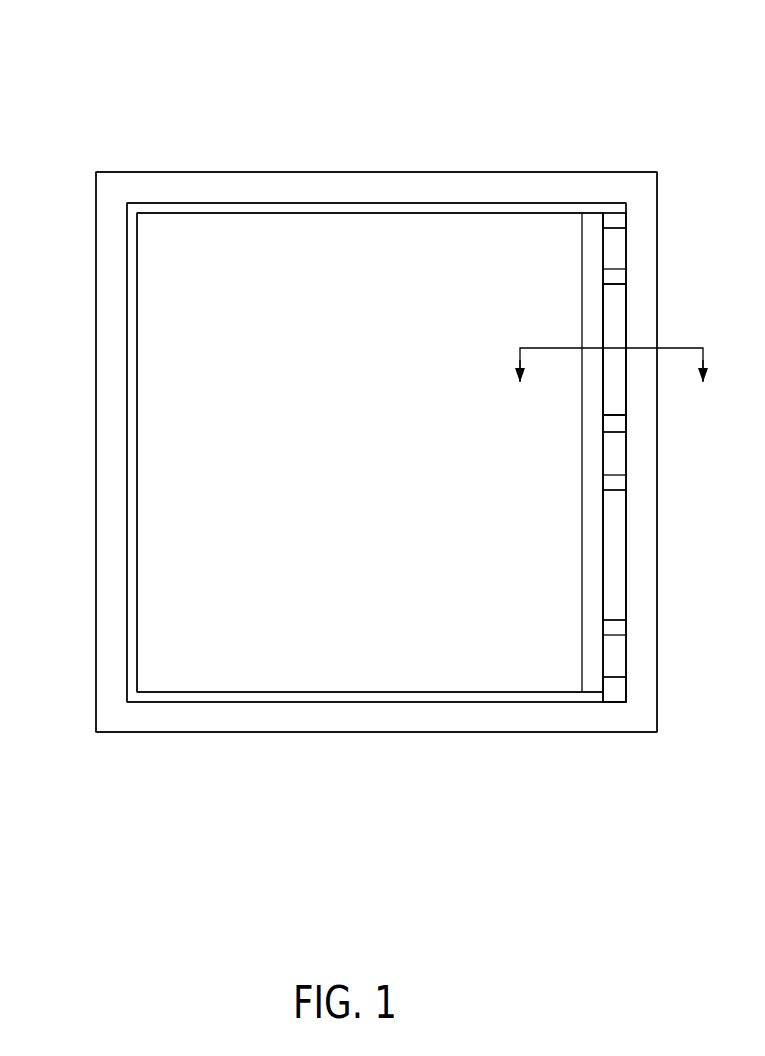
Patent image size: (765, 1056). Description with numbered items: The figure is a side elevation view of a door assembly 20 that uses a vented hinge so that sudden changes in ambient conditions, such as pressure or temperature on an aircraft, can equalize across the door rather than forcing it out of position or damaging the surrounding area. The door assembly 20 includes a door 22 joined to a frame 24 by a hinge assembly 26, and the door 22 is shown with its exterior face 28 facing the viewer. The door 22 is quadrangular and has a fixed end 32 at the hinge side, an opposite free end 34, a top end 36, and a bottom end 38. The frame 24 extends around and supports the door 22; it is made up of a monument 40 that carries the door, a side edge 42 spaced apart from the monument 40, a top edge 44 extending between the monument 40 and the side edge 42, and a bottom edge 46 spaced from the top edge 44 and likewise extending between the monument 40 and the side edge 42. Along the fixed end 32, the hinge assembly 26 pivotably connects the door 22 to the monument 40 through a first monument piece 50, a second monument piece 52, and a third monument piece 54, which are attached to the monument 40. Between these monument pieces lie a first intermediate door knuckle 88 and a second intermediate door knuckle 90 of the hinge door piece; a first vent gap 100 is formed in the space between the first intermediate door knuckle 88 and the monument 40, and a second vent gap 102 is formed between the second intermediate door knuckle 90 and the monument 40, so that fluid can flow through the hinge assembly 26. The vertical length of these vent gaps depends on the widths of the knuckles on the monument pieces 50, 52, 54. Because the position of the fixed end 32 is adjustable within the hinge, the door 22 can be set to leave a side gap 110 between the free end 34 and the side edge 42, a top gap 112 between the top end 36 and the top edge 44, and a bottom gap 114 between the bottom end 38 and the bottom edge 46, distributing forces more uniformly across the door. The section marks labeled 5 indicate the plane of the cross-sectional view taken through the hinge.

The door assembly 20 is at (607, 62).
The door 22 is at (320, 240).
The frame 24 is at (163, 180).
The hinge assembly 26 is at (612, 327).
The exterior face 28 is at (389, 464).
The fixed end 32 is at (614, 453).
The free end 34 is at (137, 451).
The top end 36 is at (377, 215).
The bottom end 38 is at (375, 690).
The monument 40 is at (647, 656).
The side edge 42 is at (112, 415).
The top edge 44 is at (411, 178).
The bottom edge 46 is at (461, 715).
The first monument piece 50 is at (620, 220).
The second monument piece 52 is at (626, 423).
The third monument piece 54 is at (615, 688).
The first intermediate door knuckle 88 is at (617, 297).
The second intermediate door knuckle 90 is at (617, 527).
The first vent gap 100 is at (620, 340).
The second vent gap 102 is at (627, 588).
The side gap 110 is at (127, 605).
The top gap 112 is at (504, 203).
The bottom gap 114 is at (315, 702).
The section line 5- 5 is at (611, 380).